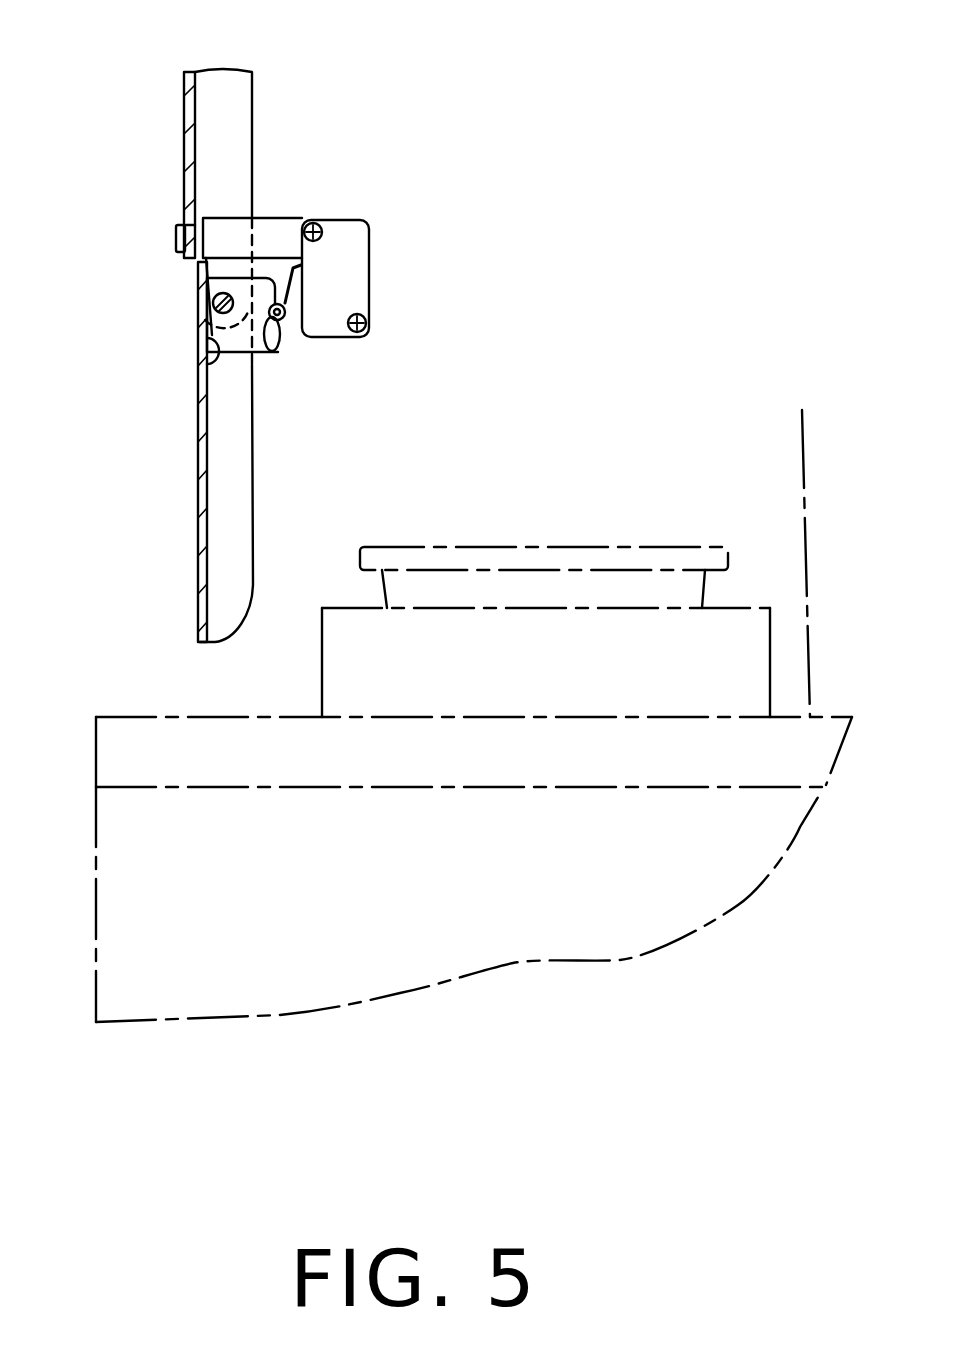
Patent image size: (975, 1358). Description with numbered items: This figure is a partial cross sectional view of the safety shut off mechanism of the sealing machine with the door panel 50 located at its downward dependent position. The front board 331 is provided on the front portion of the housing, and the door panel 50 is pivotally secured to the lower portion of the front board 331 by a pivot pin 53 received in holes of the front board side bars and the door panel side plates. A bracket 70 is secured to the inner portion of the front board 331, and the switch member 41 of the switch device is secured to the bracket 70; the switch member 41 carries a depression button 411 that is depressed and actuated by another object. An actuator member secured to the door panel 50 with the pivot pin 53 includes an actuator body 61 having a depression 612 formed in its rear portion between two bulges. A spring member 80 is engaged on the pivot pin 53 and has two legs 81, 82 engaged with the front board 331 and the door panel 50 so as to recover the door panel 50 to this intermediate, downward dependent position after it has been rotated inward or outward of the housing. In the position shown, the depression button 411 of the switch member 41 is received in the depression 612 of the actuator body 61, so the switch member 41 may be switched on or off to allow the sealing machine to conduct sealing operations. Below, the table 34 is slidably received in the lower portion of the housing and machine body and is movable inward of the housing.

The front board 331 is at (190, 110).
The spring member 80 is at (224, 232).
The leg 81 is at (207, 236).
The leg 82 is at (205, 368).
The bracket 70 is at (292, 214).
The switch member 41 is at (362, 264).
The depression button 411 is at (287, 311).
The pivot pin 53 is at (214, 300).
The actuator body 61 is at (212, 353).
The depression 612 is at (264, 352).
The door panel 50 is at (180, 455).
The table 34 is at (805, 539).